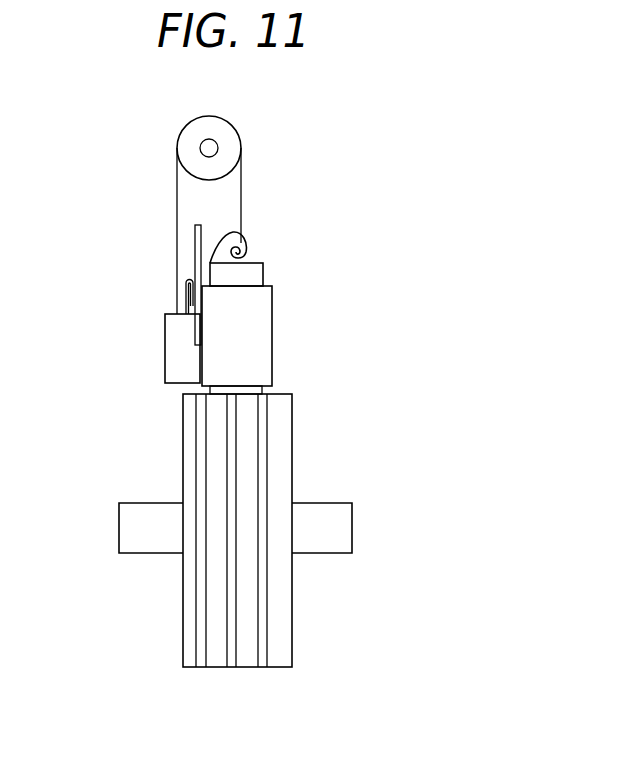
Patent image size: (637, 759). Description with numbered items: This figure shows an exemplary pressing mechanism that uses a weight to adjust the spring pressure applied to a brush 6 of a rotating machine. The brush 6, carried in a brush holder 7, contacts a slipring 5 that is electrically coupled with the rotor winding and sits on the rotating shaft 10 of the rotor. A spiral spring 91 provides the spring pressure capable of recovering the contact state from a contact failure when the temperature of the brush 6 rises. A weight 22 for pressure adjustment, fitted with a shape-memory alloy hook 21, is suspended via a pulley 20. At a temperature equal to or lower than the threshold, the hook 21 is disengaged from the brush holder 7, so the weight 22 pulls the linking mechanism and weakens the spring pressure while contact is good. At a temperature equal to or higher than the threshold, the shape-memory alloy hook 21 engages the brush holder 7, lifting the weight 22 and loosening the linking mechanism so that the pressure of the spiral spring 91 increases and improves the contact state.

The pulley 20 is at (233, 134).
The spiral spring 91 is at (196, 257).
The shape-memory alloy hook 21 is at (188, 300).
The weight for pressure adjustment 22 is at (170, 363).
The brush 6 is at (263, 270).
The brush holder 7 is at (272, 330).
The slipring 5 is at (183, 451).
The rotating shaft 10 is at (343, 530).